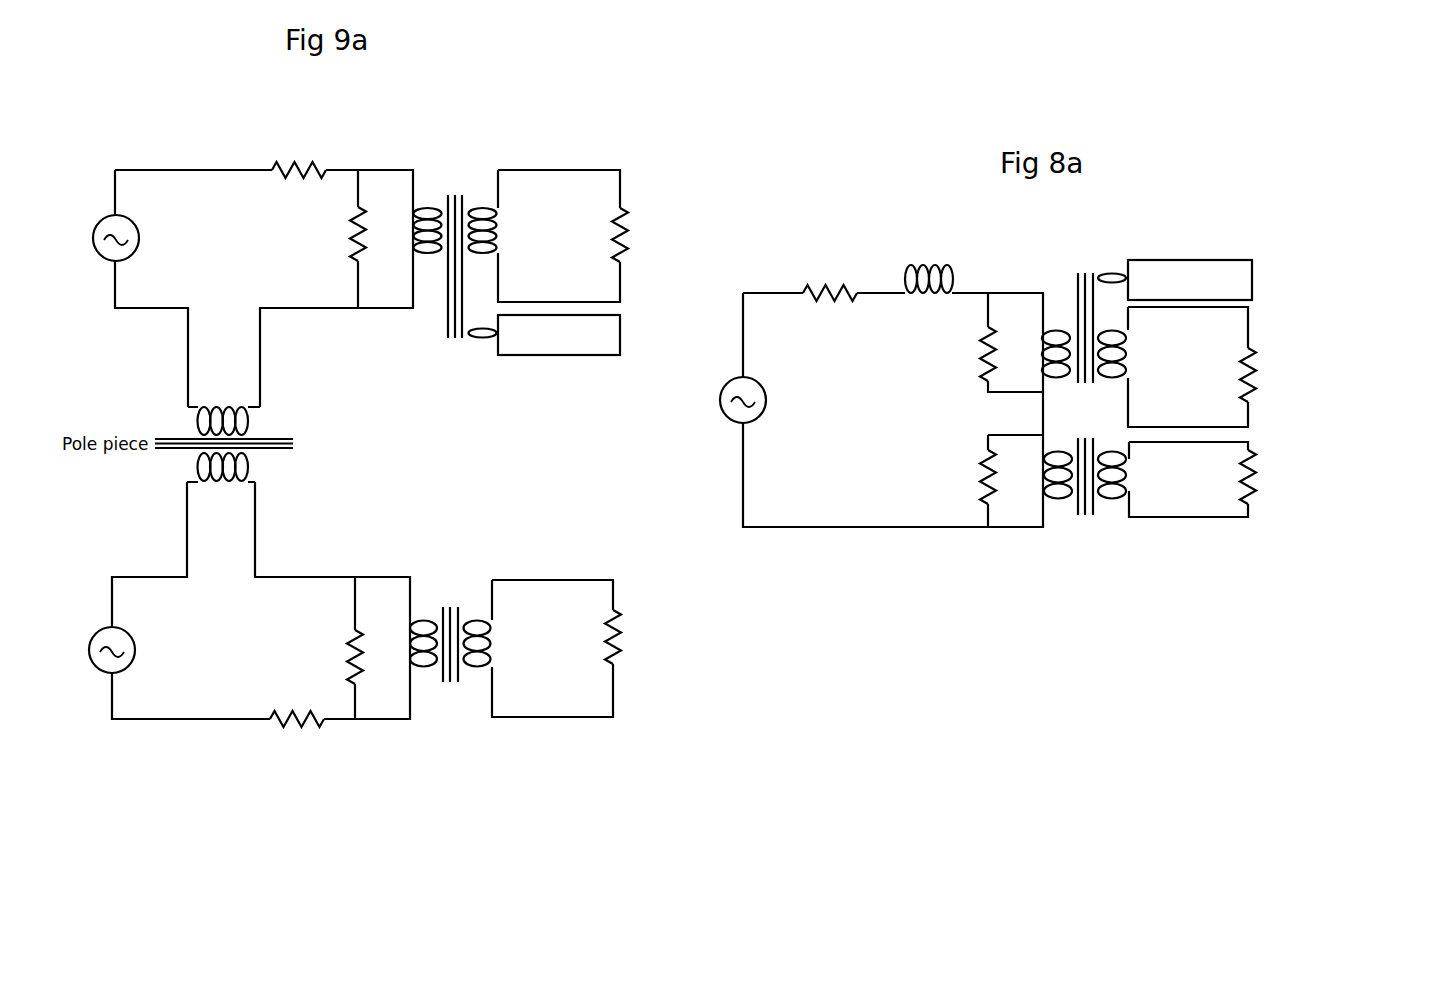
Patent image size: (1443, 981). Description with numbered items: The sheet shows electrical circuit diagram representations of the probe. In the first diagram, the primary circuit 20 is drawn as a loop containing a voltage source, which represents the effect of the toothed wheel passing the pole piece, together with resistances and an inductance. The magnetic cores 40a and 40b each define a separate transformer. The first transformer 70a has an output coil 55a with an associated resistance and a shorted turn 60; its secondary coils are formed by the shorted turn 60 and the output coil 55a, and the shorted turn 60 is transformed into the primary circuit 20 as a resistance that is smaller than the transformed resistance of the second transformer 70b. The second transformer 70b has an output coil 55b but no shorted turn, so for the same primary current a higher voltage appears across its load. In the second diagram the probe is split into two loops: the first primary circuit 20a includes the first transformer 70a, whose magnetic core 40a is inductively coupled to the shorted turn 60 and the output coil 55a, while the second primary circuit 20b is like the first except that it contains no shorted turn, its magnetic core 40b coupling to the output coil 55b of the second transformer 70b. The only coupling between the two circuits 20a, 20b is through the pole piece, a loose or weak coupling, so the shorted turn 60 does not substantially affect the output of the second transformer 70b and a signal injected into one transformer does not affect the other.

In FIG. 8A, the primary circuit 20 is at (867, 528).
In FIG. 9A, the first primary circuit 20a is at (318, 310).
In FIG. 9A, the second primary circuit 20b is at (310, 580).
In FIG. 9A, the magnetic core 40a is at (456, 188).
In FIG. 8A, the magnetic core 40a is at (1087, 272).
In FIG. 9A, the magnetic core 40b is at (448, 687).
In FIG. 8A, the magnetic core 40b is at (1093, 515).
In FIG. 9A, the output coil 55a is at (497, 228).
In FIG. 8A, the output coil 55a is at (1127, 348).
In FIG. 9A, the output coil 55b is at (491, 636).
In FIG. 8A, the output coil 55b is at (1129, 483).
In FIG. 9A, the shorted turn 60 is at (568, 355).
In FIG. 8A, the shorted turn 60 is at (1222, 260).
In FIG. 9A, the first transformer 70a is at (617, 430).
In FIG. 8A, the first transformer 70a is at (1312, 258).
In FIG. 9A, the second transformer 70b is at (683, 570).
In FIG. 8A, the second transformer 70b is at (1302, 442).